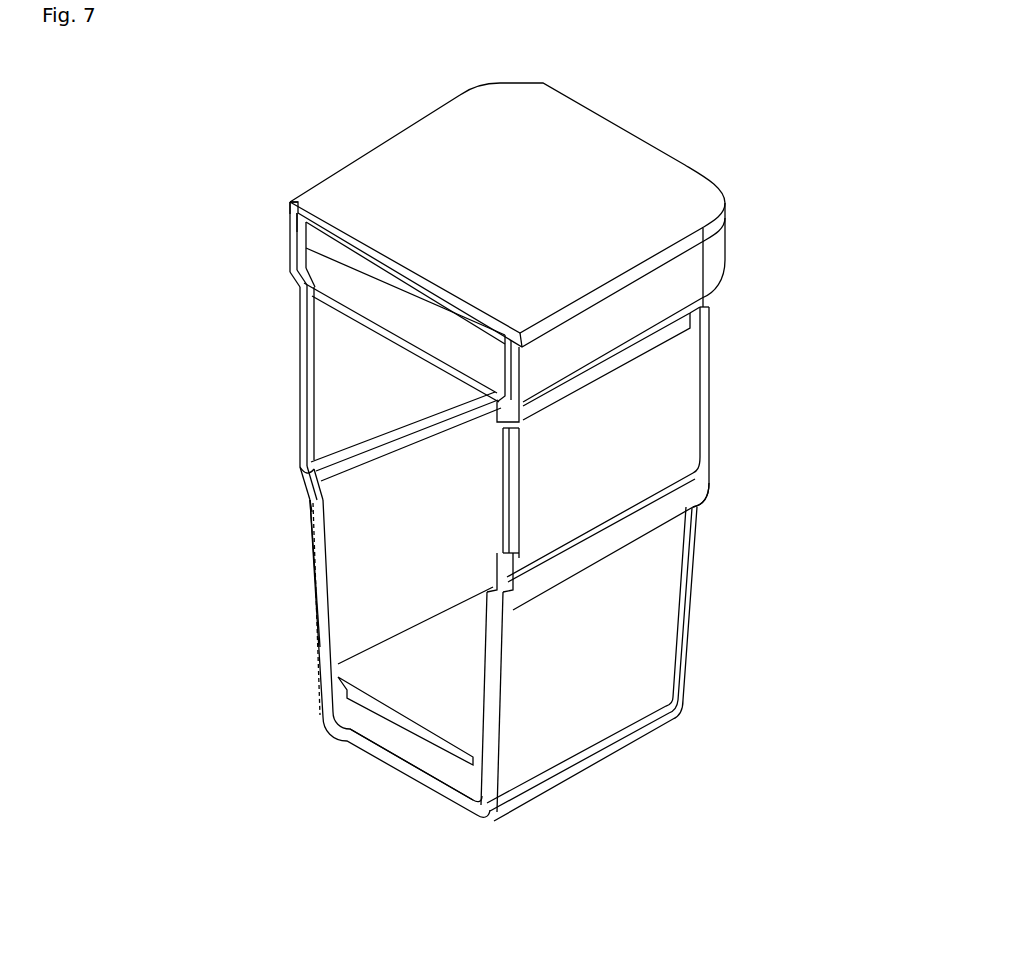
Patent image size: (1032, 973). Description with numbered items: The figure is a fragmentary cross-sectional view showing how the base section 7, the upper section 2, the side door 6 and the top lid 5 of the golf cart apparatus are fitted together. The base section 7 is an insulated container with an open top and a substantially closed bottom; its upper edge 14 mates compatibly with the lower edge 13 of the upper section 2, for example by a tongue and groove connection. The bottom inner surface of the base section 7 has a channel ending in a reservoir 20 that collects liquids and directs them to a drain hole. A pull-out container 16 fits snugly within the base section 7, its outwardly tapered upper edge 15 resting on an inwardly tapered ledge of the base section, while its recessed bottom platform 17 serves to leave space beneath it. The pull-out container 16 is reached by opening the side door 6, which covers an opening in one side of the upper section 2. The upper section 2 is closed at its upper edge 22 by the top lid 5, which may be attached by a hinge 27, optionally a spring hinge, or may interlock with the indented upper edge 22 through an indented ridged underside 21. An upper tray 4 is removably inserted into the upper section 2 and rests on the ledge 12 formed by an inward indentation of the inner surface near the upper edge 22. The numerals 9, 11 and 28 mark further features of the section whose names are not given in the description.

The upper section 2 is at (297, 395).
The upper tray 4 is at (353, 289).
The top lid 5 is at (572, 178).
The side door 6 is at (677, 410).
The base section 7 is at (650, 603).
The rim 9 is at (713, 458).
The rim bottom edge 11 is at (298, 504).
The ledge 12 is at (293, 284).
The lower edge 13 is at (298, 452).
The upper edge 14 is at (296, 476).
The outwardly tapered upper edge 15 is at (352, 482).
The pull-out container 16 is at (373, 629).
The recessed bottom platform 17 is at (434, 745).
The reservoir 20 is at (374, 726).
The indented ridged underside 21 is at (291, 227).
The upper edge 22 is at (292, 202).
The hinge 27 is at (284, 213).
The lower body side wall 28 is at (318, 635).